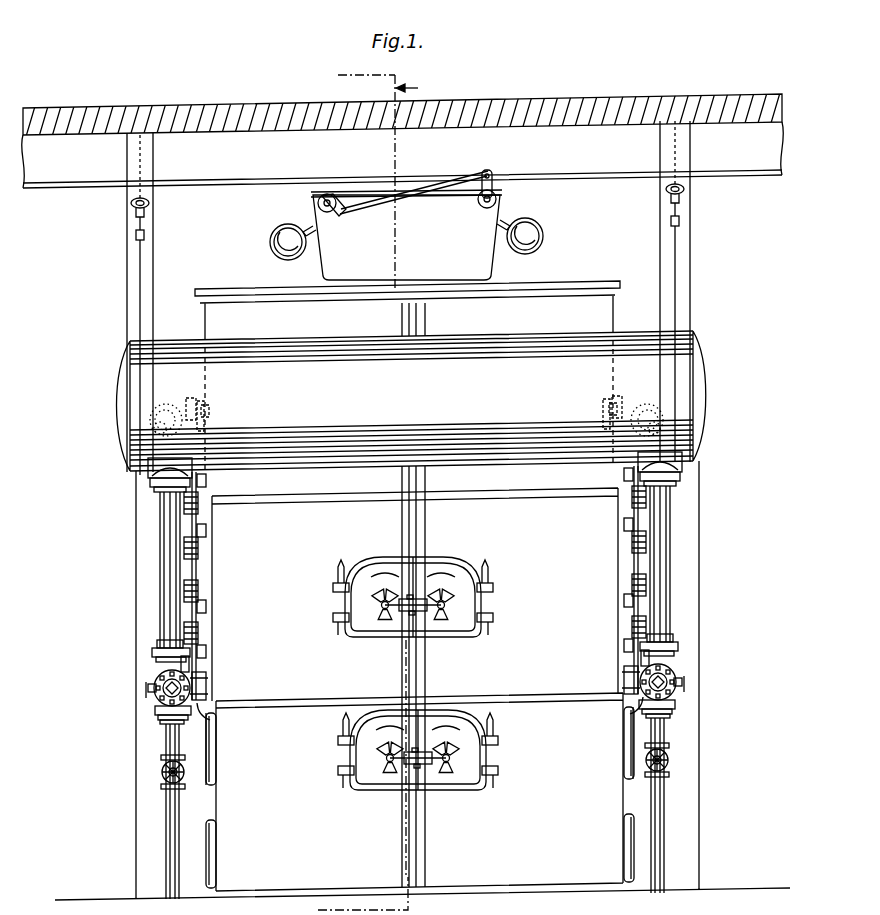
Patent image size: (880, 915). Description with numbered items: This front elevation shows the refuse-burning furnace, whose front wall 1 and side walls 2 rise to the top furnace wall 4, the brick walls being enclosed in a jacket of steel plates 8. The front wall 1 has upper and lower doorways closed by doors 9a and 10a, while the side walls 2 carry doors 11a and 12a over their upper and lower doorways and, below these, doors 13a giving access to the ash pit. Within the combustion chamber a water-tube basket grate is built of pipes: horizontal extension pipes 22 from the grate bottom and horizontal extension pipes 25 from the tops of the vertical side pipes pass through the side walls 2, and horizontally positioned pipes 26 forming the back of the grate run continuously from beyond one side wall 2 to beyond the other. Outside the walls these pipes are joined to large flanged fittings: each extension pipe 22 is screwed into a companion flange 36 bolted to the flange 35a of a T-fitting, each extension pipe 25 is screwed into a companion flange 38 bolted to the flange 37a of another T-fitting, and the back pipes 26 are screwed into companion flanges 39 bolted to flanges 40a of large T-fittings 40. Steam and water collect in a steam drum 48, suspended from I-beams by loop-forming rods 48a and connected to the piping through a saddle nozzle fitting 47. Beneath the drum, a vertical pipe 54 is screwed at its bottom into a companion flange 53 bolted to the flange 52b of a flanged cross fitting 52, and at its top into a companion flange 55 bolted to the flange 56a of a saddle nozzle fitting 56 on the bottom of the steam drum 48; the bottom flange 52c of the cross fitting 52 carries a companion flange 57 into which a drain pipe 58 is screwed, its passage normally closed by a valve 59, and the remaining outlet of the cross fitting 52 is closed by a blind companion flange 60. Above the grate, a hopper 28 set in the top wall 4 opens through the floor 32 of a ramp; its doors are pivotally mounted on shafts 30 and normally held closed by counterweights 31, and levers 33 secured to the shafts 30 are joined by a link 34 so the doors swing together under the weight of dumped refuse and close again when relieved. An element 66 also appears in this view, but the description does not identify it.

The front wall 1 is at (297, 552).
The side walls 2 is at (198, 325).
The top furnace wall 4 is at (357, 495).
The jacket of steel plates 8 is at (300, 842).
The door 9a is at (393, 570).
The door 10a is at (400, 780).
The door 11a is at (205, 598).
The door 12a is at (212, 776).
The door 13a is at (208, 866).
The extension pipes 22 is at (208, 686).
The extension pipes 25 is at (209, 410).
The pipes 26 is at (207, 480).
The hopper 28 is at (480, 256).
The pivotal shafts 30 is at (318, 203).
The counterweights 31 is at (284, 243).
The floor 32 is at (630, 102).
The levers 33 is at (341, 214).
The link 34 is at (408, 202).
The flange 35a is at (212, 718).
The companion flange 36 is at (217, 726).
The flange 37a is at (190, 398).
The companion flange 38 is at (203, 402).
The companion flanges 39 is at (203, 510).
The T-fittings 40 is at (162, 498).
The flanges 40a is at (177, 527).
The saddle nozzle fitting 47 is at (408, 408).
The steam drum 48 is at (411, 401).
The loop-forming rods 48a is at (127, 276).
The flanged cross fitting 52 is at (144, 686).
The flange 52b is at (155, 658).
The bottom flange 52c is at (157, 712).
The companion flange 53 is at (160, 648).
The vertical pipe 54 is at (170, 580).
The companion flange 55 is at (158, 480).
The saddle nozzle fitting 56 is at (150, 482).
The flange 56a is at (157, 490).
The companion flange 57 is at (160, 722).
The drain pipe 58 is at (166, 748).
The valve 59 is at (160, 772).
The blind companion flange 60 is at (190, 665).
The valve handle 66 is at (150, 690).